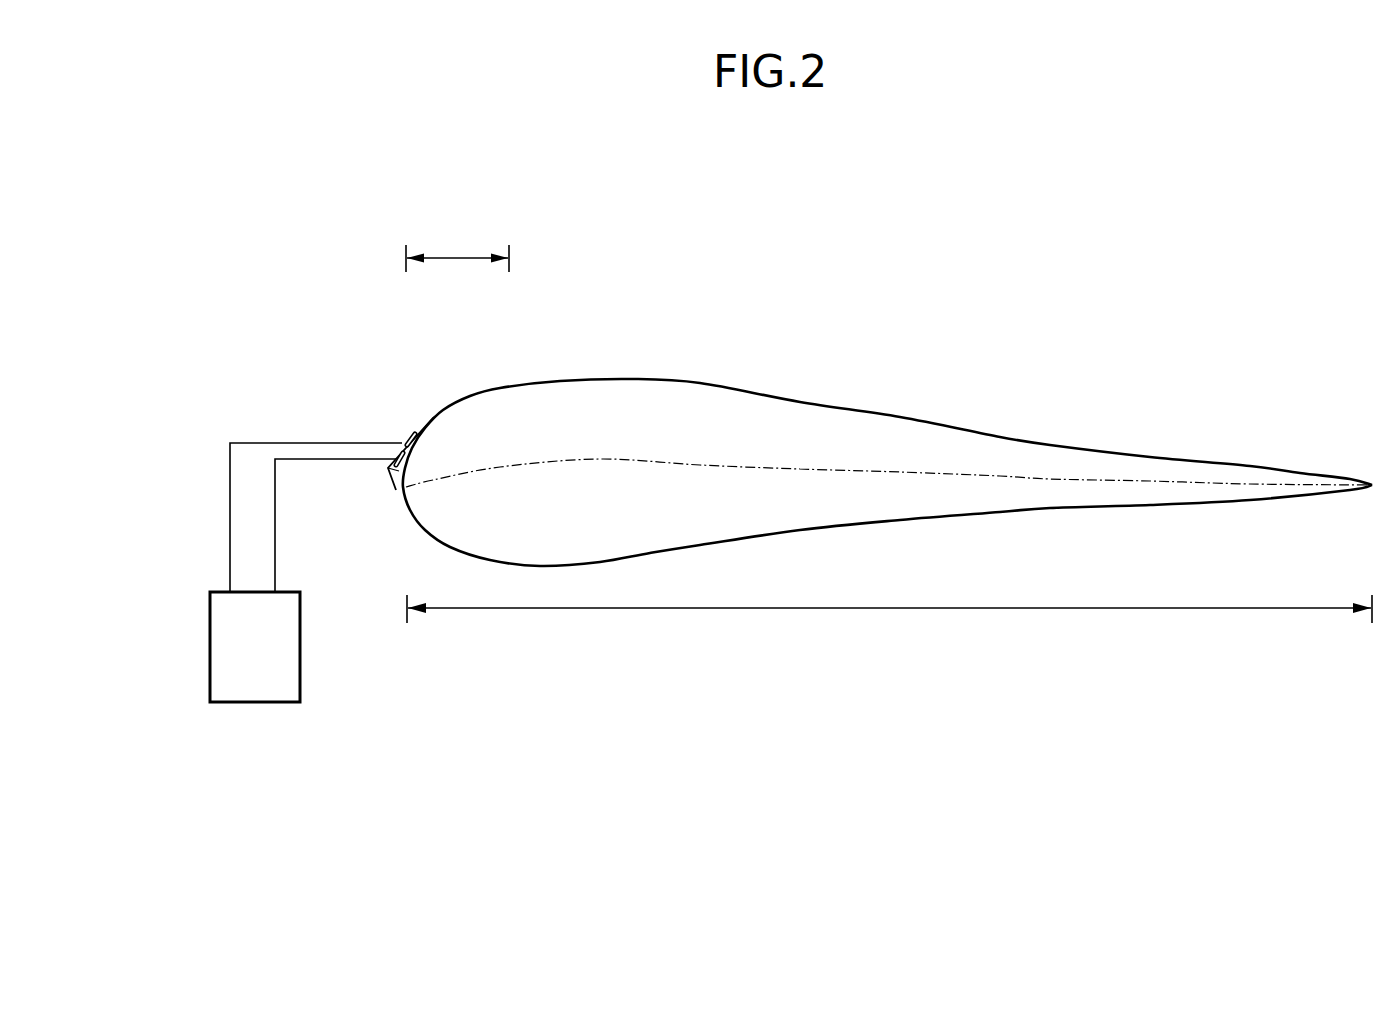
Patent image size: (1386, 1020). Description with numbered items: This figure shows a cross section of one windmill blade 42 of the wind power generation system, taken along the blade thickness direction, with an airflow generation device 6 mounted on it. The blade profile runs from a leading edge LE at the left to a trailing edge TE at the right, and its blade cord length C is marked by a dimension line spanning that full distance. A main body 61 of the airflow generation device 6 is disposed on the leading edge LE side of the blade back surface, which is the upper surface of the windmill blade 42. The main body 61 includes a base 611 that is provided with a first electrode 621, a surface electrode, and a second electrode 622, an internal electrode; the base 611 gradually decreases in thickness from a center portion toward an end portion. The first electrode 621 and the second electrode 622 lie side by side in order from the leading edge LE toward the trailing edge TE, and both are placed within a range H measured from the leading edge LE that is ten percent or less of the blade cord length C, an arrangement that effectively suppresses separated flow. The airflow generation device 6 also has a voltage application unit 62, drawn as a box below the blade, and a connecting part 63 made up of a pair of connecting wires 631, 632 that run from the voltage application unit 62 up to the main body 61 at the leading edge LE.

The airflow generation device 6 is at (244, 413).
The windmill blade 42 is at (742, 400).
The main body 61 is at (381, 400).
The base 611 is at (428, 423).
The first electrode 621 is at (347, 411).
The second electrode 622 is at (404, 438).
The voltage application unit 62 is at (210, 657).
The connecting part 63 is at (259, 517).
The connecting wire 631 is at (230, 560).
The connecting wire 632 is at (275, 527).
The leading edge LE is at (390, 489).
The trailing edge TE is at (1369, 470).
The range H is at (457, 246).
The blade cord length C is at (889, 617).